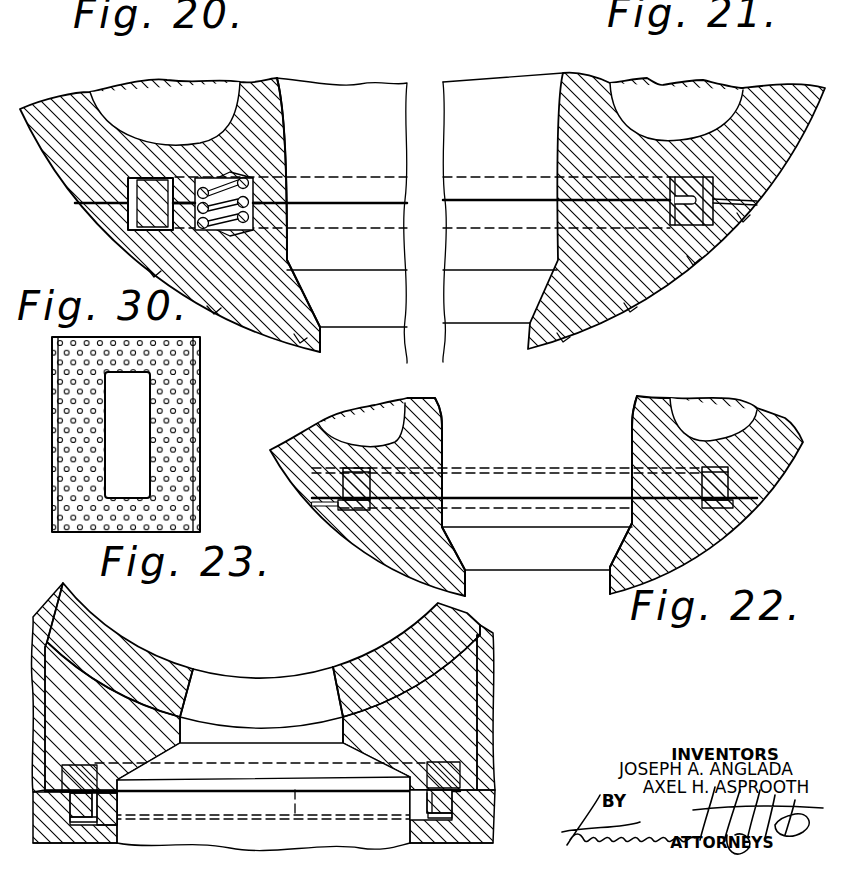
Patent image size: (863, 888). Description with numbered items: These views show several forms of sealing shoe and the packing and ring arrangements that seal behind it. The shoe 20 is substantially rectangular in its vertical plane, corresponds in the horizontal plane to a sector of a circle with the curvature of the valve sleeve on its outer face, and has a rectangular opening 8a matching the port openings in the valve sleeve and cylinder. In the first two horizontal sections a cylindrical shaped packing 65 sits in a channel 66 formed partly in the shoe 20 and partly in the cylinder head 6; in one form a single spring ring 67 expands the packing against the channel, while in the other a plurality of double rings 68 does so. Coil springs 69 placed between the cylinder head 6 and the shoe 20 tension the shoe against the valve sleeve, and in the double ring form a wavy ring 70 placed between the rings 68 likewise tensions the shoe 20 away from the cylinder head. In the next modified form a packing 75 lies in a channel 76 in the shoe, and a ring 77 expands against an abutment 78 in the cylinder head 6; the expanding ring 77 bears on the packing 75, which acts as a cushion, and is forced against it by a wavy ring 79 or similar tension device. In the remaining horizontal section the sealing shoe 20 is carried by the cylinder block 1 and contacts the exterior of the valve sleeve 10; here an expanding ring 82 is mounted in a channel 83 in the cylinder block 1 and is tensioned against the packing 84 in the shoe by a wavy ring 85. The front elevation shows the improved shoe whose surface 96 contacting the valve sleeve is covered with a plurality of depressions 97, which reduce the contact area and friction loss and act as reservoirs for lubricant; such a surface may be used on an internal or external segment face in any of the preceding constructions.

In FIG. 23, the cylinder block 1 is at (488, 749).
In FIG. 20, the cylinder head 6 is at (276, 121).
In FIG. 22, the cylinder head 6 is at (293, 465).
In FIG. 30, the rectangular opening 8a is at (137, 433).
In FIG. 23, the valve sleeve 10 is at (363, 668).
In FIG. 20, the shoe 20 is at (283, 315).
In FIG. 22, the shoe 20 is at (400, 557).
In FIG. 23, the shoe 20 is at (457, 717).
In FIG. 20, the packing 65 is at (113, 232).
In FIG. 21, the packing 65 is at (717, 216).
In FIG. 20, the channel 66 is at (138, 192).
In FIG. 20, the spring ring 67 is at (155, 200).
In FIG. 21, the rings 68 is at (690, 185).
In FIG. 20, the coil springs 69 is at (240, 200).
In FIG. 21, the wavy ring 70 is at (680, 226).
In FIG. 22, the packing 75 is at (352, 508).
In FIG. 22, the channel 76 is at (368, 508).
In FIG. 22, the ring 77 is at (358, 482).
In FIG. 22, the abutment 78 is at (343, 487).
In FIG. 22, the wavy ring 79 is at (715, 467).
In FIG. 23, the expanding ring 82 is at (448, 800).
In FIG. 23, the channel 83 is at (457, 810).
In FIG. 23, the packing 84 is at (447, 773).
In FIG. 23, the wavy ring 85 is at (452, 840).
In FIG. 21, the surface 96 is at (643, 275).
In FIG. 30, the surface 96 is at (117, 527).
In FIG. 20, the depressions 97 is at (283, 338).
In FIG. 21, the depressions 97 is at (565, 337).
In FIG. 30, the depressions 97 is at (181, 497).